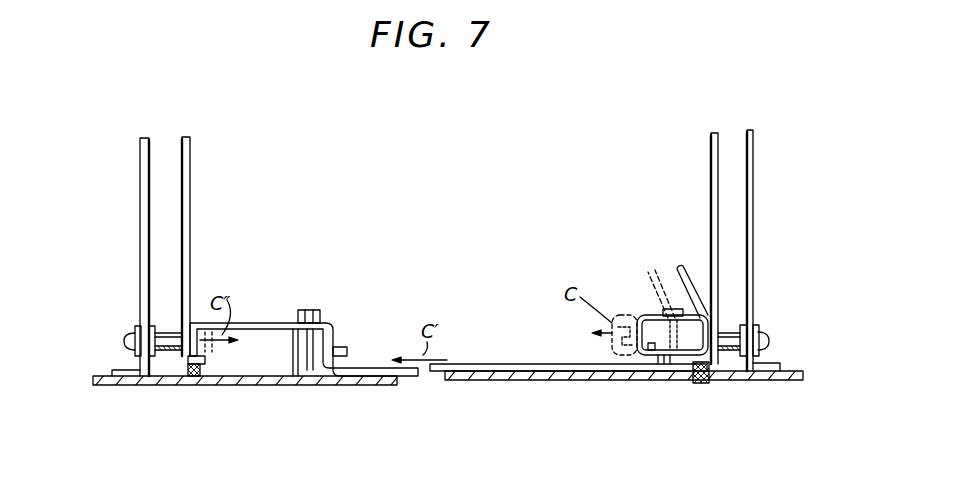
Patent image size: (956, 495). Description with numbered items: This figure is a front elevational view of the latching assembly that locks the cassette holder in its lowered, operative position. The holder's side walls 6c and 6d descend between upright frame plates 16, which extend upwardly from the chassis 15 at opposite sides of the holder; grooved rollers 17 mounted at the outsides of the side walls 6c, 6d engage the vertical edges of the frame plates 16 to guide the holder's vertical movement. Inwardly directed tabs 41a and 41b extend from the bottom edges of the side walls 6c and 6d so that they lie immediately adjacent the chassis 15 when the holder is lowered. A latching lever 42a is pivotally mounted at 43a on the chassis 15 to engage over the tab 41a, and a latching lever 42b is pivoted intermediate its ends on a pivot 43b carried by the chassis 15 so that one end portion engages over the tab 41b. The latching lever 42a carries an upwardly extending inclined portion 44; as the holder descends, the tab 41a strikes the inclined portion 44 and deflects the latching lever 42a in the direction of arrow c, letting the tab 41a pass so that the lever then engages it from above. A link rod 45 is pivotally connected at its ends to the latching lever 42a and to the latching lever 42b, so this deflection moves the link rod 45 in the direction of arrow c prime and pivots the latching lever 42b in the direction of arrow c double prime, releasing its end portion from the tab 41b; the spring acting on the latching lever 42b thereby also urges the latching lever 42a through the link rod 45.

The chassis 15 is at (287, 376).
The frame plates 16 is at (140, 198).
The side wall 6c is at (696, 177).
The side wall 6d is at (228, 209).
The grooved rollers 17 is at (138, 323).
The tab 41a is at (760, 416).
The tab 41b is at (197, 378).
The latching lever 42a is at (625, 275).
The latching lever 42b is at (294, 308).
The pivot 43a is at (698, 438).
The pivot 43b is at (362, 293).
The inclined portion 44 is at (674, 272).
The link rod 45 is at (551, 371).